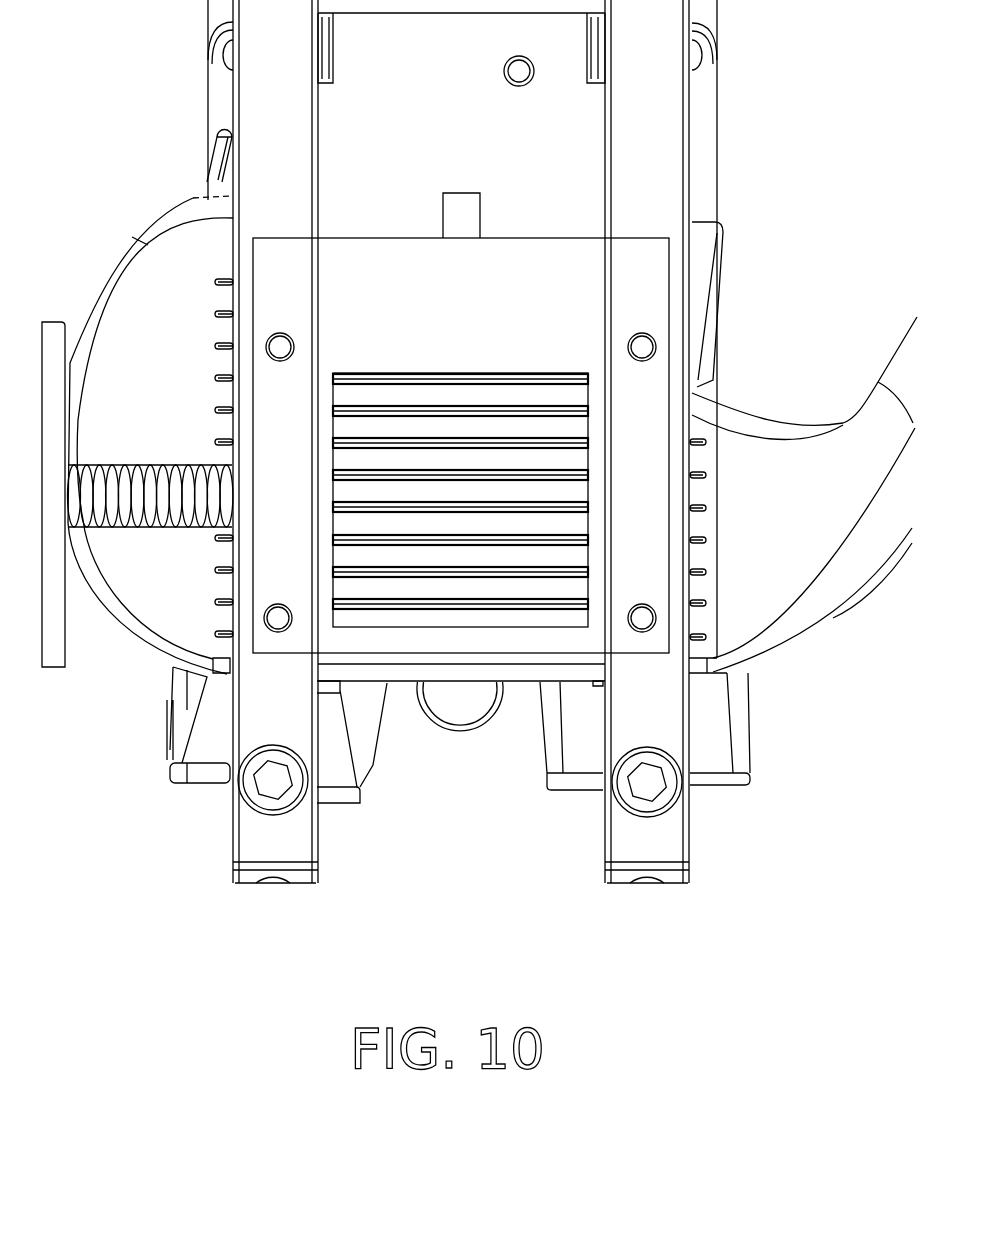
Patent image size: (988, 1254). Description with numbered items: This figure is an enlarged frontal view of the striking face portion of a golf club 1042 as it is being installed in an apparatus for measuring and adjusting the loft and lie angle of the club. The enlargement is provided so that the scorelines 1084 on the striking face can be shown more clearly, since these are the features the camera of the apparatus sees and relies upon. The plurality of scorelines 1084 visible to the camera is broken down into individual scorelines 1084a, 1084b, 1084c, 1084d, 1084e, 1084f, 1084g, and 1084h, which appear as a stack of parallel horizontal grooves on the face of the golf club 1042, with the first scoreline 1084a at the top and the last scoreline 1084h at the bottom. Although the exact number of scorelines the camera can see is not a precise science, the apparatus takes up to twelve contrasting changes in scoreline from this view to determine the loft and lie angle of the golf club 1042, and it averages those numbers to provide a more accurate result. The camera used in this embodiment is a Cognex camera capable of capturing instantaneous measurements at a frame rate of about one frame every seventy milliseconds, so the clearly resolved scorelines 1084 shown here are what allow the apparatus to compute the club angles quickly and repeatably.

The scorelines 1084 is at (690, 490).
The scoreline 1084a is at (520, 370).
The scoreline 1084b is at (498, 407).
The scoreline 1084c is at (440, 437).
The scoreline 1084d is at (378, 470).
The scoreline 1084e is at (357, 513).
The scoreline 1084f is at (387, 543).
The scoreline 1084g is at (407, 577).
The scoreline 1084h is at (413, 617).
The golf club 1042 is at (798, 647).